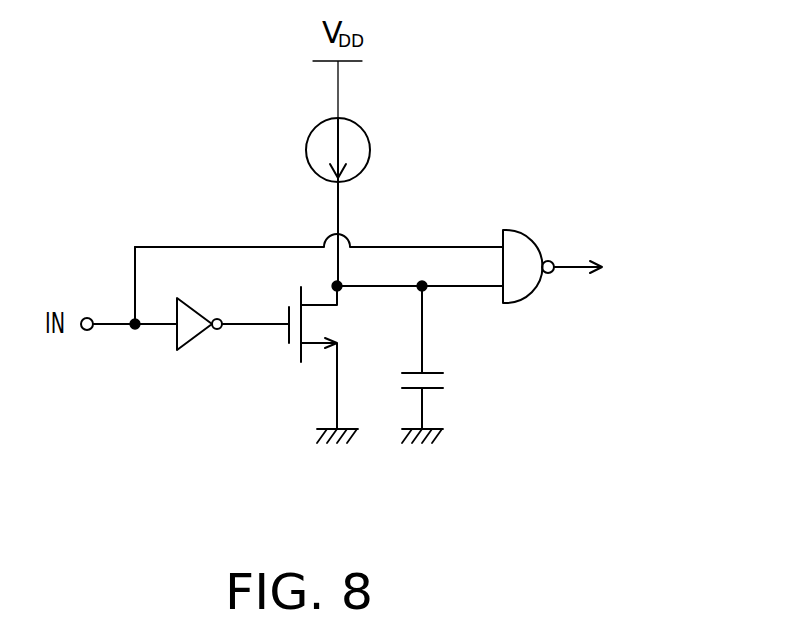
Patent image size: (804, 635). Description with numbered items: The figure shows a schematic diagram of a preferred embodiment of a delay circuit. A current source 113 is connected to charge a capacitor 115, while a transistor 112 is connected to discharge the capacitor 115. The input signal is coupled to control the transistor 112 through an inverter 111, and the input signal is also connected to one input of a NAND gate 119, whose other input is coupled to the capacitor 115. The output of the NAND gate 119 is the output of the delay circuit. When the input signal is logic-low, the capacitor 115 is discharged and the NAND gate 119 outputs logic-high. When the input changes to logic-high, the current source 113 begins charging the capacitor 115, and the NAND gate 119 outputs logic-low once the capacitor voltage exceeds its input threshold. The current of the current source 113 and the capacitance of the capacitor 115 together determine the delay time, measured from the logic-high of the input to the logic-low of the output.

The inverter 111 is at (193, 330).
The transistor 112 is at (320, 362).
The current source 113 is at (370, 150).
The capacitor 115 is at (452, 380).
The NAND gate 119 is at (528, 280).